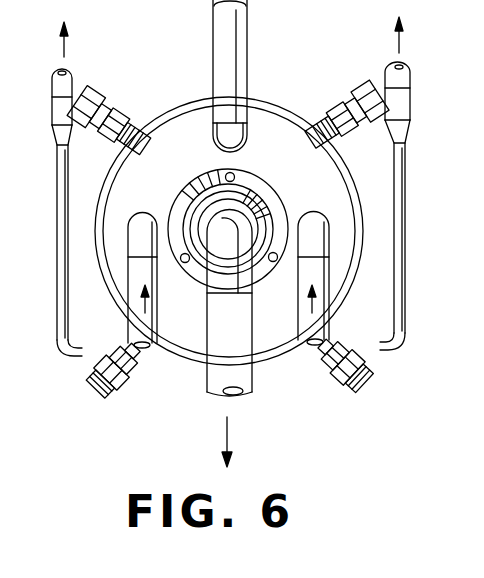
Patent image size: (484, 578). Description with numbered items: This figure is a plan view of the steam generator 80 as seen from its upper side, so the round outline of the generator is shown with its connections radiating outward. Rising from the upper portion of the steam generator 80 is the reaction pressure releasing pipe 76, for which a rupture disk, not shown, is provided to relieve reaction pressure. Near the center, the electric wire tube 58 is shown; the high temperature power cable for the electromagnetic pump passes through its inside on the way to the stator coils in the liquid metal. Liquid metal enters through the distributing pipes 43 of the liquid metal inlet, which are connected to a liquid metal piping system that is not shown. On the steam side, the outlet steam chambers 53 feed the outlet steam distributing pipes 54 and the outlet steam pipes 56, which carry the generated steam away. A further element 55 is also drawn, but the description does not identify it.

The distributing pipes 43 is at (158, 301).
The outlet steam chambers 53 is at (346, 358).
The outlet steam distributing pipes 54 is at (369, 386).
The left pipe 55 is at (56, 323).
The outlet steam pipes 56 is at (72, 86).
The electric wire tube 58 is at (277, 253).
The reaction pressure releasing pipe 76 is at (222, 33).
The steam generator 80 is at (284, 99).